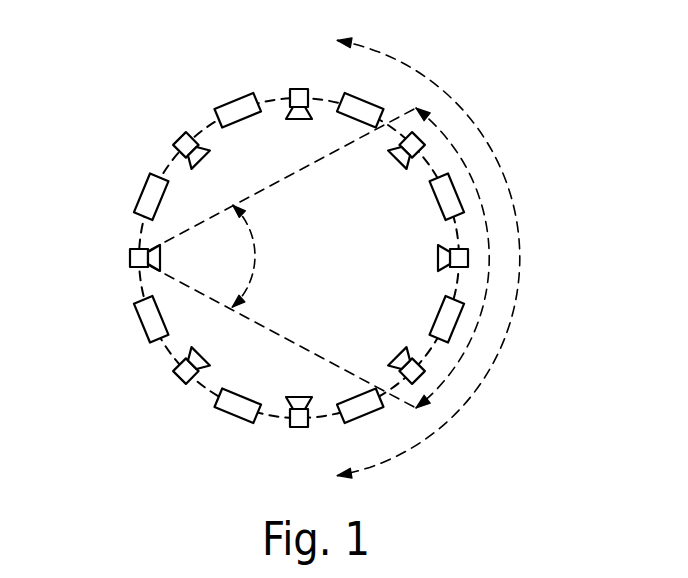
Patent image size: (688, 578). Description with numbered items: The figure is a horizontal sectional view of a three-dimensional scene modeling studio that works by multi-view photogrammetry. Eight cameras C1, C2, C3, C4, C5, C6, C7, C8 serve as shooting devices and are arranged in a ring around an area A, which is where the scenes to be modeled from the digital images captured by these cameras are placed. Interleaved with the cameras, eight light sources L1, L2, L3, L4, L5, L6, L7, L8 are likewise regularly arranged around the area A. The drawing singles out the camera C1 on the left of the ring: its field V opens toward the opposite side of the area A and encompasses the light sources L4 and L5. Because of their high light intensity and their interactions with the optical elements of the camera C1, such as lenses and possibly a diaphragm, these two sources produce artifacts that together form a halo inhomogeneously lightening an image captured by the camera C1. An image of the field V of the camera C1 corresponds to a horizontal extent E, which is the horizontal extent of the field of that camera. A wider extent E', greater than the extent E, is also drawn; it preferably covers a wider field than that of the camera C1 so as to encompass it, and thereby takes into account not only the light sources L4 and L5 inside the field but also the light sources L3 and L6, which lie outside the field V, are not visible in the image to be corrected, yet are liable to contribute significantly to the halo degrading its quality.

The area A is at (125, 284).
The field V is at (283, 258).
The horizontal extent E is at (462, 258).
The extent E' is at (440, 258).
The camera C1 is at (130, 252).
The camera C2 is at (178, 140).
The camera C3 is at (300, 89).
The camera C4 is at (390, 160).
The camera C5 is at (438, 258).
The camera C6 is at (397, 358).
The camera C7 is at (297, 426).
The camera C8 is at (180, 382).
The light source L1 is at (141, 190).
The light source L2 is at (247, 93).
The light source L3 is at (358, 97).
The light source L4 is at (435, 200).
The light source L5 is at (437, 318).
The light source L6 is at (360, 408).
The light source L7 is at (230, 415).
The light source L8 is at (137, 325).